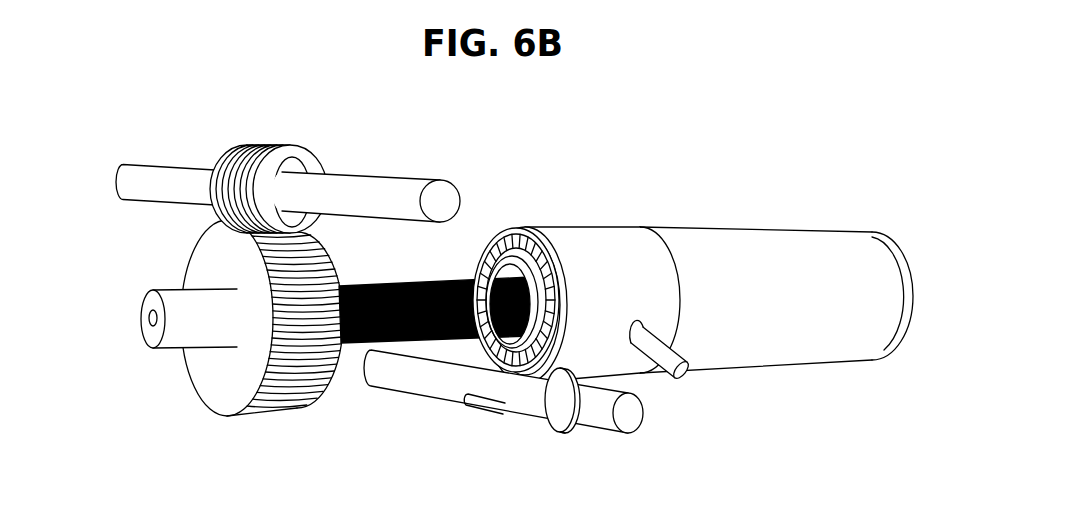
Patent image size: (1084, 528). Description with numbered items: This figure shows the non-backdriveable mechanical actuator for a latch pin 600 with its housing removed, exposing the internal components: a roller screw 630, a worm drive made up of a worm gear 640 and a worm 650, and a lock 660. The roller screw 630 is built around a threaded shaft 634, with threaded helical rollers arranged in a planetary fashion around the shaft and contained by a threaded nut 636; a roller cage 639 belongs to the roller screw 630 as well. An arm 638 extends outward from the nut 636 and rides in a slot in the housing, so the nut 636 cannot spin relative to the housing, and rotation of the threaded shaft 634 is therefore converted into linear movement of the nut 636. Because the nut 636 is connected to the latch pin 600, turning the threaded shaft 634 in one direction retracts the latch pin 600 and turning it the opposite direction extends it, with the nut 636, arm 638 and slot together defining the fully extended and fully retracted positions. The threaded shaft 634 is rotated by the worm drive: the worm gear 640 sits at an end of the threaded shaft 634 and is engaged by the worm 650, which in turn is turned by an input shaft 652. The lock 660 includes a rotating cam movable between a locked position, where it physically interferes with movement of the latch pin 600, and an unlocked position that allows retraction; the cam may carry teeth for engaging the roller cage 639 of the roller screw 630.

The latch pin 600 is at (769, 231).
The roller screw 630 is at (570, 222).
The threaded shaft 634 is at (387, 283).
The threaded nut 636 is at (605, 225).
The arm 638 is at (684, 380).
The roller cage 639 is at (505, 232).
The worm gear 640 is at (284, 410).
The worm 650 is at (267, 145).
The input shaft 652 is at (150, 166).
The lock 660 is at (628, 418).